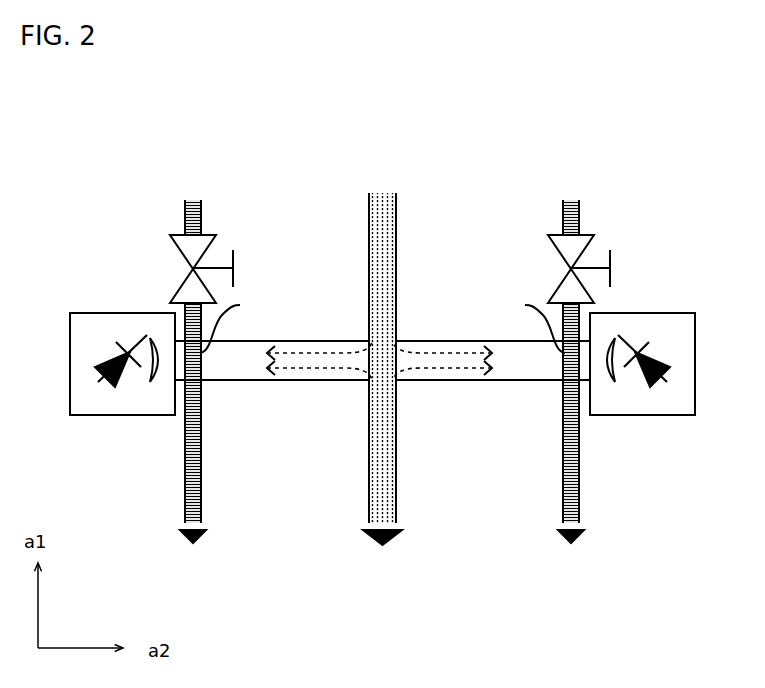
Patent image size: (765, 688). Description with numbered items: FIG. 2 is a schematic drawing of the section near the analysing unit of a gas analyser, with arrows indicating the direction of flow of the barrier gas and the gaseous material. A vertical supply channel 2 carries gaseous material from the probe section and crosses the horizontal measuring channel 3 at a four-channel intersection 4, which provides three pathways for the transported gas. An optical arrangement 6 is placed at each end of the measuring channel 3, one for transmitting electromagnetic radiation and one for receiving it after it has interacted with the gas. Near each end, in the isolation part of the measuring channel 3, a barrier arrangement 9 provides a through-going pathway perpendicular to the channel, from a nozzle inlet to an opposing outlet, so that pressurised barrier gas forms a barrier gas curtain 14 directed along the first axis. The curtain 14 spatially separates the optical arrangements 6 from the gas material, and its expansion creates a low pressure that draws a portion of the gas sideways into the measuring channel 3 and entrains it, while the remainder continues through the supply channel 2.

The supply channel 2 is at (398, 242).
The measuring channel 3 is at (288, 340).
The four-channel intersection 4 is at (398, 337).
The optical arrangement 6 is at (82, 300).
The barrier arrangement 9 is at (157, 228).
The barrier gas curtain 14 is at (382, 322).